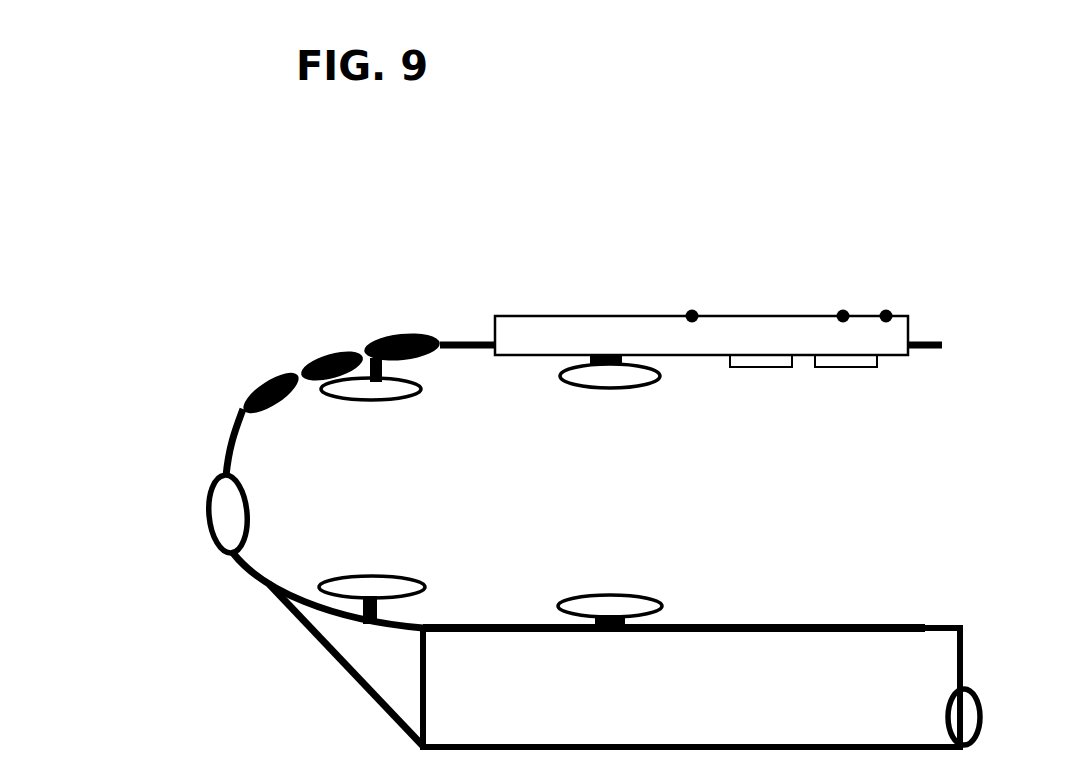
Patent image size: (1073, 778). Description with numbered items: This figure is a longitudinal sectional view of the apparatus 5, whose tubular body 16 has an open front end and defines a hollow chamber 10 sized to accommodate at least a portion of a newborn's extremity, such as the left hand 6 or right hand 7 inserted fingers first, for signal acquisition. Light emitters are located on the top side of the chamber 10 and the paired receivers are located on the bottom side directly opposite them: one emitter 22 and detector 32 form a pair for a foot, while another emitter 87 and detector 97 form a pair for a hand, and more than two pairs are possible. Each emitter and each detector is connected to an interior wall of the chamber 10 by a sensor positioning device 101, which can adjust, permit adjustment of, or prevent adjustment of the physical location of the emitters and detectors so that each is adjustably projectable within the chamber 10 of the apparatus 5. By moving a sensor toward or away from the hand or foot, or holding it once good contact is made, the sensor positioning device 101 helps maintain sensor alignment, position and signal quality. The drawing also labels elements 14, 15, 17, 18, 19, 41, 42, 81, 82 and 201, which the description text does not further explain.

The apparatus 5 is at (478, 314).
The chamber 10 is at (915, 595).
The circuit board 14 is at (766, 314).
The connector 15 is at (378, 338).
The body 16 is at (270, 588).
The cable loop 17 is at (212, 472).
The housing body 18 is at (691, 687).
The cable loop 19 is at (976, 703).
The emitter 22 is at (408, 396).
The detector 32 is at (381, 577).
The connection point 41 is at (843, 309).
The connection point 42 is at (886, 309).
The left hand 6 is at (755, 368).
The right hand 7 is at (845, 368).
The connector 81 is at (330, 357).
The connector 82 is at (264, 385).
The emitter 87 is at (645, 388).
The detector 97 is at (631, 596).
The sensor positioning device 101 is at (370, 372).
The connection point 201 is at (693, 309).